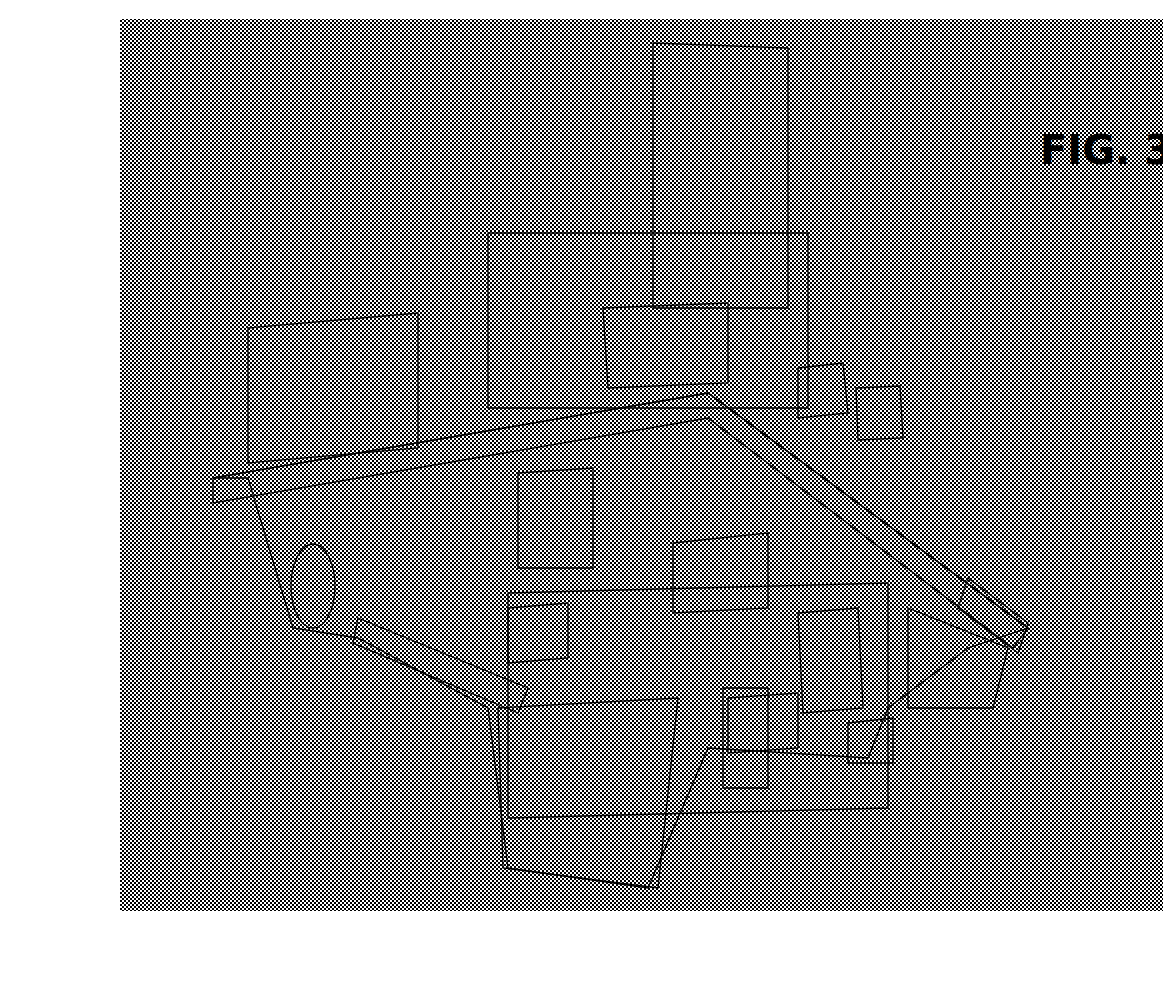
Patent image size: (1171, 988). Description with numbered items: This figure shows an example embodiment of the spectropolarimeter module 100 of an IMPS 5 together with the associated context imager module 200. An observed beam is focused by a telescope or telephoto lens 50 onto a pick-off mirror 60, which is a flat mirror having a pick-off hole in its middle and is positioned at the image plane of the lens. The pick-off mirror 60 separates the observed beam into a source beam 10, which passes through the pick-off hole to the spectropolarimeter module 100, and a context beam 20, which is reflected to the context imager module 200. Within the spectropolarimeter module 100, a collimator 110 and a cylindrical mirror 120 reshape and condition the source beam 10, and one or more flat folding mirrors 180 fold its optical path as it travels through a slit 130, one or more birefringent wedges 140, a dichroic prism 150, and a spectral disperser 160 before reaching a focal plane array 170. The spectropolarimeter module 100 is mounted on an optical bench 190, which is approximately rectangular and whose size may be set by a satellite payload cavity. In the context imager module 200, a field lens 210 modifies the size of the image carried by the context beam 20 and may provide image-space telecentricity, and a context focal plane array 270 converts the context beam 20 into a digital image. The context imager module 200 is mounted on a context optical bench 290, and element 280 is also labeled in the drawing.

The IMPS 5 is at (653, 548).
The source beam 10 is at (410, 696).
The context beam 20 is at (630, 520).
The telescope or telephoto lens 50 is at (656, 175).
The pick-off mirror 60 is at (622, 322).
The spectropolarimeter module 100 is at (731, 716).
The collimator 110 is at (852, 660).
The cylindrical mirror 120 is at (593, 503).
The slit 130 is at (802, 741).
The birefringent wedges 140 is at (763, 756).
The dichroic prism 150 is at (583, 646).
The spectral disperser 160 is at (249, 592).
The focal plane array 170 is at (536, 818).
The flat folding mirrors 180 is at (824, 653).
The optical bench 190 is at (998, 664).
The context imager module 200 is at (569, 290).
The field lens 210 is at (853, 352).
The context focal plane array 270 is at (286, 388).
The support 280 is at (907, 379).
The context optical bench 290 is at (1043, 588).